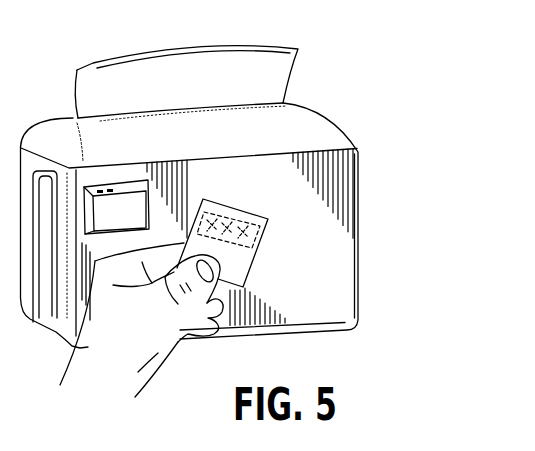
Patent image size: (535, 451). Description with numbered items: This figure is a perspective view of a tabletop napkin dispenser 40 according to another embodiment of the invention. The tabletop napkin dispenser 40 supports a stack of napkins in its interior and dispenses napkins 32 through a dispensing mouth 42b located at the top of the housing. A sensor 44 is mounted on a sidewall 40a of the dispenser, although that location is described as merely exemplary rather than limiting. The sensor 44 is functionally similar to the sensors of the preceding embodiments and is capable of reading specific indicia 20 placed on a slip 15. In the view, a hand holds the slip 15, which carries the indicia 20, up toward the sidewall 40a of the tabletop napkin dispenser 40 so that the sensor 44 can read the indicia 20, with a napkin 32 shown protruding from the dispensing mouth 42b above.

The slip 15 is at (217, 200).
The indicia 20 is at (262, 240).
The napkins 32 is at (291, 23).
The tabletop napkin dispenser 40 is at (337, 75).
The sidewall 40a is at (320, 288).
The dispensing mouth 42b is at (198, 107).
The sensor 44 is at (124, 182).